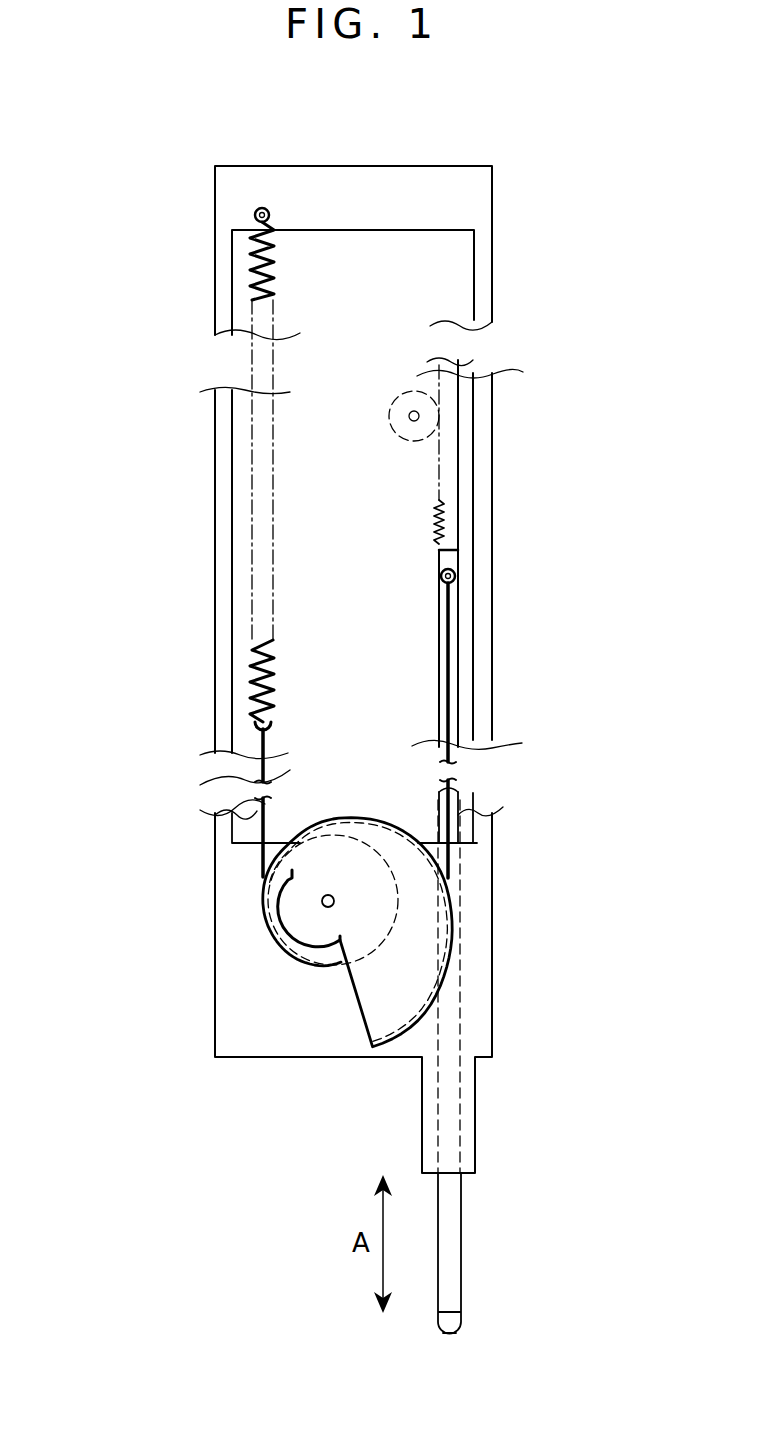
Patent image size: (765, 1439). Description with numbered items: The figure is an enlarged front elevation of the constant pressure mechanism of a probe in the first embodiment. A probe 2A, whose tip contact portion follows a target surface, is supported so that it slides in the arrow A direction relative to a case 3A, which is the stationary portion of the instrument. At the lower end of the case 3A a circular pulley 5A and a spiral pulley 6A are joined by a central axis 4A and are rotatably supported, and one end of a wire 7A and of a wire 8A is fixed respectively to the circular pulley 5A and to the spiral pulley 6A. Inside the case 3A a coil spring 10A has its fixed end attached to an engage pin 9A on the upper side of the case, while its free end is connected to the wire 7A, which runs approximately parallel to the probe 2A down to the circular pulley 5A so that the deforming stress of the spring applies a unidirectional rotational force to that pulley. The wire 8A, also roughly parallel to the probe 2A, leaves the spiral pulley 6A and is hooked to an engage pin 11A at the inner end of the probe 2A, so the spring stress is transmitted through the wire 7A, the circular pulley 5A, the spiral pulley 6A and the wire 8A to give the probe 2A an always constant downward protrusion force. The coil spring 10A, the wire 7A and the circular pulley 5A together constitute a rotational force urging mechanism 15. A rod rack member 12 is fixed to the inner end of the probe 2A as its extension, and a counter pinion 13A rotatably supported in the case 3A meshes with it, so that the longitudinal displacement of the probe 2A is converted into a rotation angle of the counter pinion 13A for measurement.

The rotational force urging mechanism 15 is at (172, 613).
The case 3A is at (222, 408).
The engage pin 9A is at (262, 207).
The coil spring 10A is at (252, 478).
The wire 7A is at (255, 755).
The counter pinion 13A is at (398, 432).
The guide member 12 is at (458, 460).
The engage pin 11A is at (458, 573).
The wire 8A is at (452, 655).
The probe 2A is at (458, 800).
The spiral pulley 6A is at (415, 945).
The circular pulley 5A is at (290, 935).
The central axis 4A is at (322, 901).